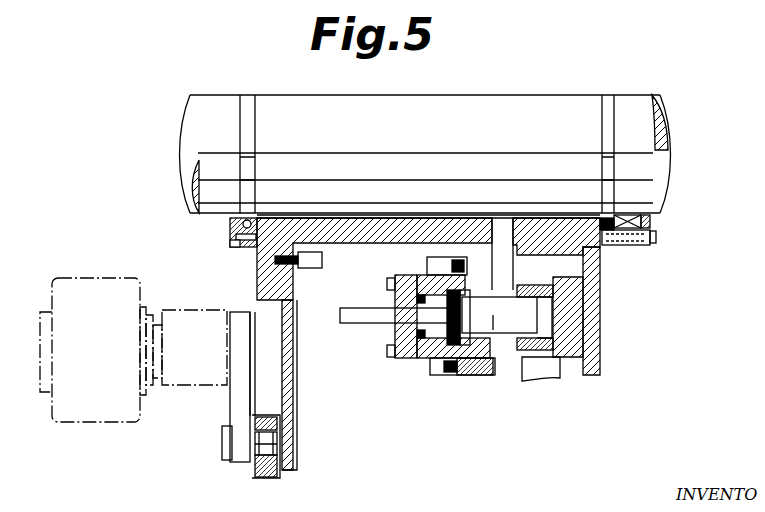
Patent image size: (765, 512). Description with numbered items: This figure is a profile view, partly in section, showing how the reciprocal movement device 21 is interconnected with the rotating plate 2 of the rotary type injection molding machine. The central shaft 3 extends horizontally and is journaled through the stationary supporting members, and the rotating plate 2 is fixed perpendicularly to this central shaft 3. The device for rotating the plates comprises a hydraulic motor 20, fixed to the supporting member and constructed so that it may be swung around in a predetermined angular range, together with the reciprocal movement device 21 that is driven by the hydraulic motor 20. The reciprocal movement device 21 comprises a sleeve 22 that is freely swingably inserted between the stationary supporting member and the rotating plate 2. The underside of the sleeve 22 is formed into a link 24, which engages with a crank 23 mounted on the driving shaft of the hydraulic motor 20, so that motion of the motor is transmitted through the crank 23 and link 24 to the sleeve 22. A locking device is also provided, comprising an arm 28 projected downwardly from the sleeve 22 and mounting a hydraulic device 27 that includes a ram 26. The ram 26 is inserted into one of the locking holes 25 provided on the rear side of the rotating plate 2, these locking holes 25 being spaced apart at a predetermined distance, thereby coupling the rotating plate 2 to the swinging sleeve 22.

The rotating plate 2 is at (592, 300).
The central shaft 3 is at (516, 112).
The hydraulic motor 20 is at (80, 286).
The reciprocal movement device 21 is at (296, 383).
The sleeve 22 is at (358, 232).
The crank 23 is at (238, 402).
The link 24 is at (288, 343).
The locking holes 25 is at (545, 370).
The ram 26 is at (491, 350).
The hydraulic device 27 is at (418, 356).
The arm 28 is at (470, 375).